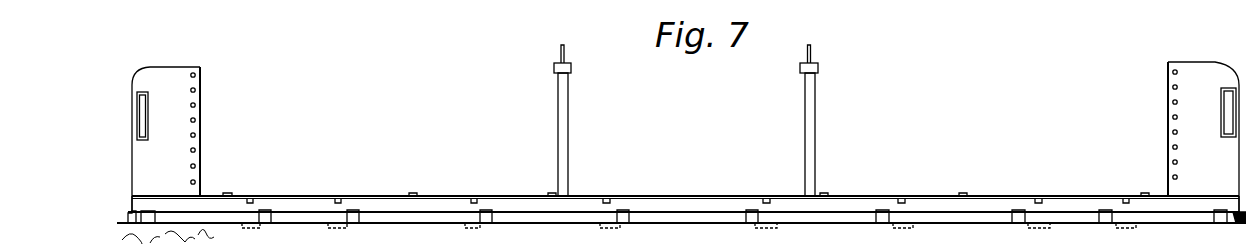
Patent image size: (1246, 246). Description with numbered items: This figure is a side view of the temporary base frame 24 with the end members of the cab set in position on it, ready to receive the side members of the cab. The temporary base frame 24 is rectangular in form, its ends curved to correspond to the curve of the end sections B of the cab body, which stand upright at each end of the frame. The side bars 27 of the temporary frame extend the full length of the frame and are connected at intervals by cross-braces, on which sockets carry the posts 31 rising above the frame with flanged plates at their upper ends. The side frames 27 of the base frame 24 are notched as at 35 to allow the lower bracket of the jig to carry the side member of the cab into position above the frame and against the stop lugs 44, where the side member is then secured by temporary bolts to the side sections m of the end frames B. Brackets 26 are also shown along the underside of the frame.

The end section B is at (172, 66).
The side section m is at (185, 133).
The temporary base frame 24 is at (837, 183).
The brackets 26 is at (330, 229).
The side bar 27 is at (460, 196).
The post 31 is at (568, 108).
The notch 35 is at (339, 196).
The stop lug 44 is at (227, 193).